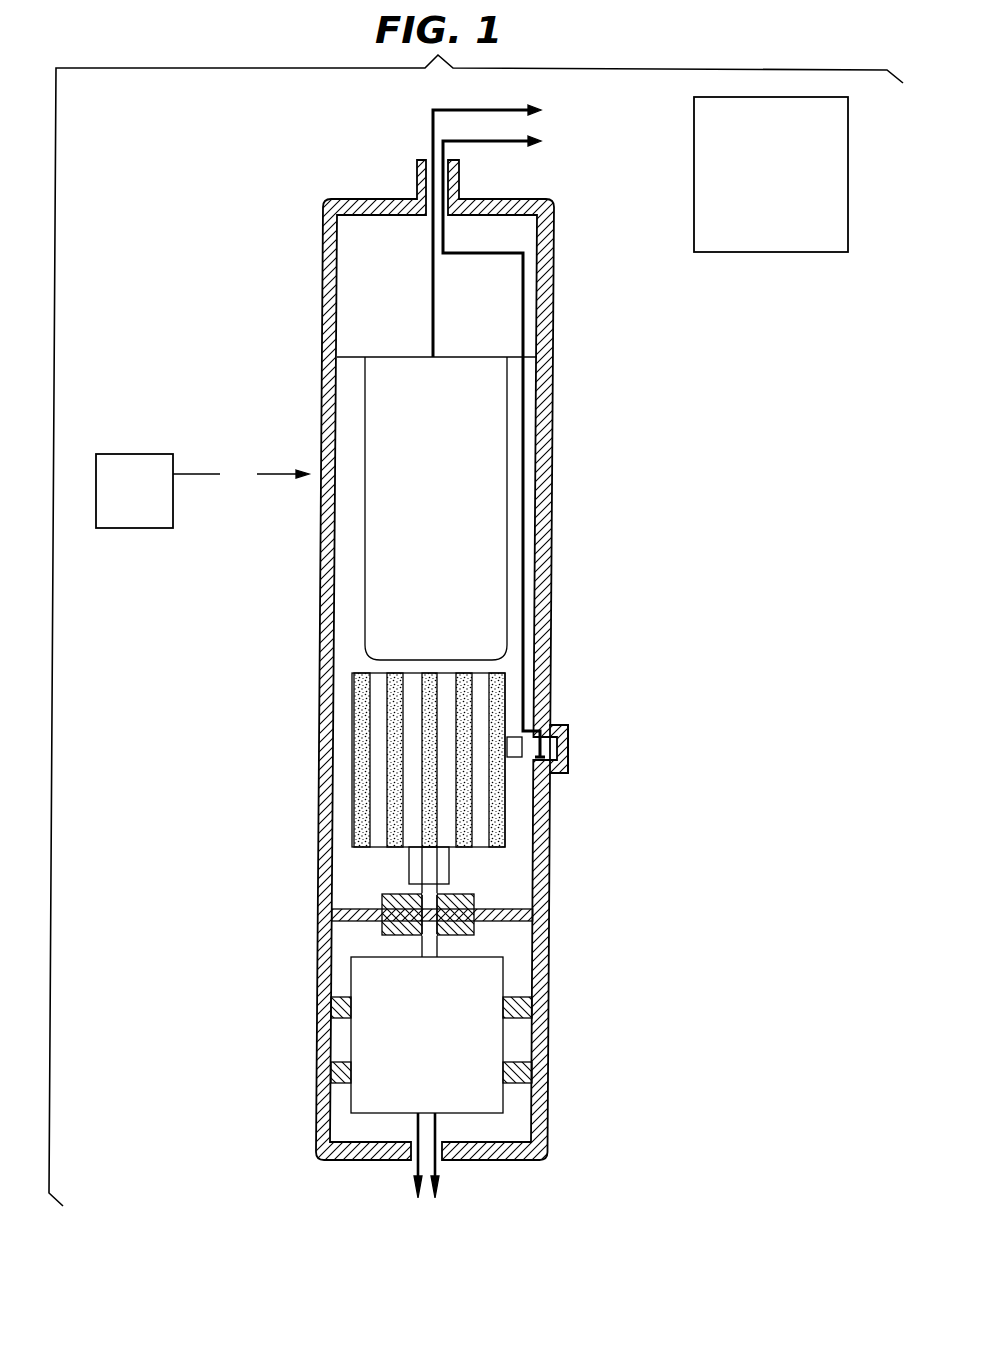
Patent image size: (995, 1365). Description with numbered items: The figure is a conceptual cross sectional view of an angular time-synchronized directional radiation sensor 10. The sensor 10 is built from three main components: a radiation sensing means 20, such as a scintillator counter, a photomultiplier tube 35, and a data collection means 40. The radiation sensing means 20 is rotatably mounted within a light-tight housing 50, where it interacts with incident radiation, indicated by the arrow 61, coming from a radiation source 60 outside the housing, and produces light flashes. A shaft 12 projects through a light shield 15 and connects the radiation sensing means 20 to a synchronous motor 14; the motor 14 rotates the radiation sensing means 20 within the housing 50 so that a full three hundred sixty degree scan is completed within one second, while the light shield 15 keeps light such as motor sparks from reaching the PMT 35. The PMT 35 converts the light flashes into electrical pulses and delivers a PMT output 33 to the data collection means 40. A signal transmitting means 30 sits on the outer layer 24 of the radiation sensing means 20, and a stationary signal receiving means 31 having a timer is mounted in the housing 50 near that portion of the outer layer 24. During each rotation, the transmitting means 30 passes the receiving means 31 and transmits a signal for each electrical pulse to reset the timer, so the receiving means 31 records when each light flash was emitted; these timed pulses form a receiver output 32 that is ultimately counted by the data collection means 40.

The sensor 10 is at (660, 531).
The shaft 12 is at (437, 945).
The synchronous motor 14 is at (351, 1043).
The light shield 15 is at (323, 912).
The radiation sensing means 20 is at (352, 765).
The outer layer 24 is at (505, 836).
The signal transmitting means 30 is at (522, 757).
The signal receiving means 31 is at (570, 745).
The receiver output 32 is at (511, 441).
The PMT output 33 is at (506, 226).
The photomultiplier tube 35 is at (365, 557).
The data collection means 40 is at (694, 228).
The light-tight housing 50 is at (323, 363).
The radiation source 60 is at (131, 528).
The arrow 61 is at (241, 475).